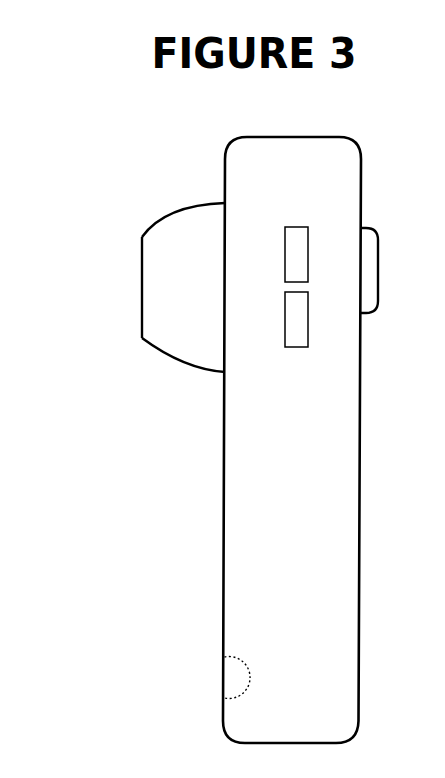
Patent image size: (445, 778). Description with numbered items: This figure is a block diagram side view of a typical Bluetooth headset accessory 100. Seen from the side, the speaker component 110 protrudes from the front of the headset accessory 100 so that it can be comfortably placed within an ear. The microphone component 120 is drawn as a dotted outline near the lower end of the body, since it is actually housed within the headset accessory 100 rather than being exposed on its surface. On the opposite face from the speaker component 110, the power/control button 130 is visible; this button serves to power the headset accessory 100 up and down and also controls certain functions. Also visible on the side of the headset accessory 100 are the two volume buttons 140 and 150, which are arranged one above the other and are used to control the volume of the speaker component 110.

The headset accessory 100 is at (225, 440).
The speaker component 110 is at (142, 310).
The microphone component 120 is at (250, 677).
The power/control button 130 is at (378, 272).
The volume button 140 is at (285, 250).
The volume button 150 is at (285, 322).